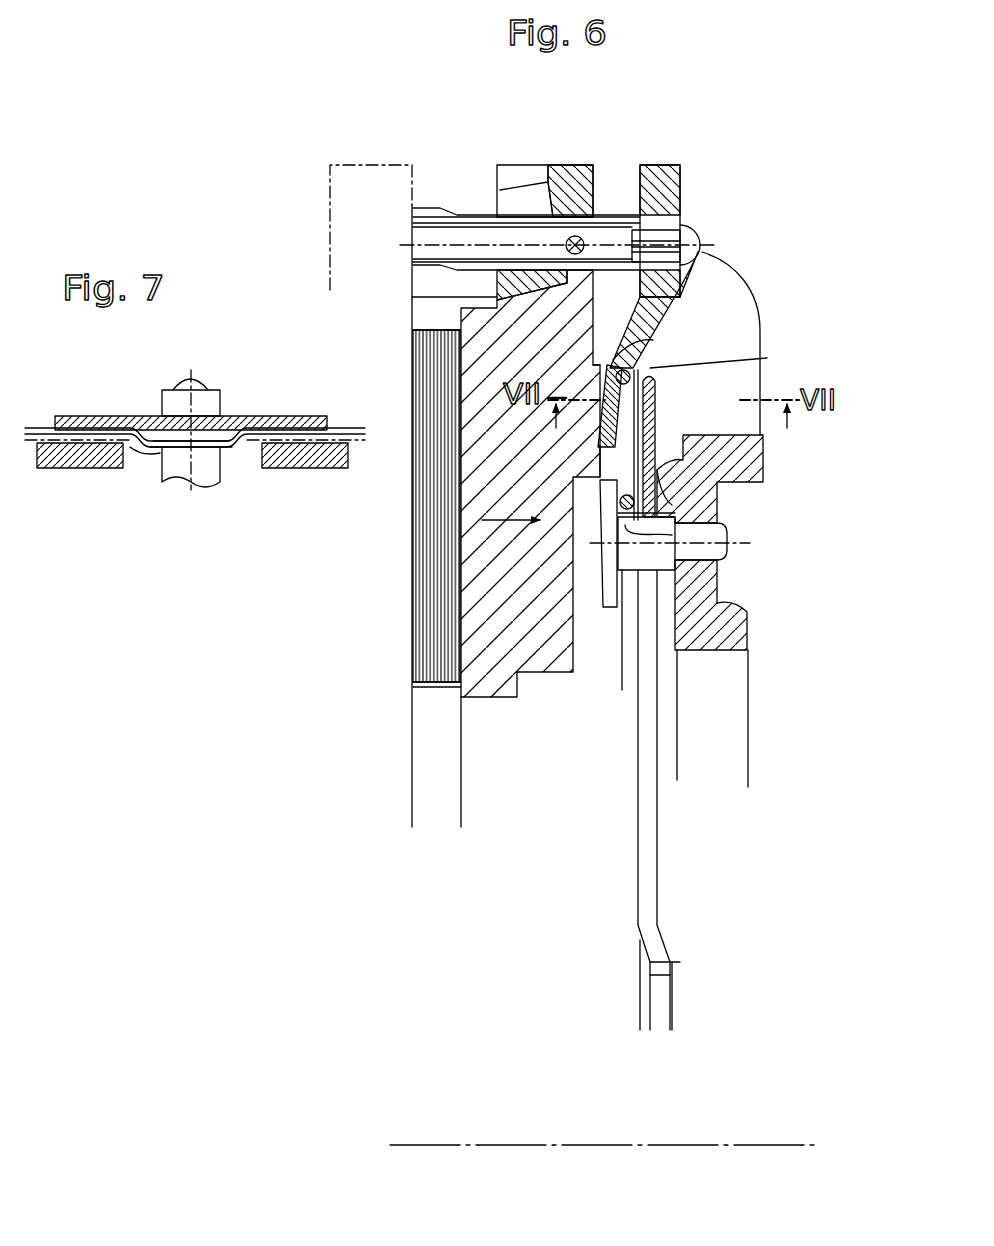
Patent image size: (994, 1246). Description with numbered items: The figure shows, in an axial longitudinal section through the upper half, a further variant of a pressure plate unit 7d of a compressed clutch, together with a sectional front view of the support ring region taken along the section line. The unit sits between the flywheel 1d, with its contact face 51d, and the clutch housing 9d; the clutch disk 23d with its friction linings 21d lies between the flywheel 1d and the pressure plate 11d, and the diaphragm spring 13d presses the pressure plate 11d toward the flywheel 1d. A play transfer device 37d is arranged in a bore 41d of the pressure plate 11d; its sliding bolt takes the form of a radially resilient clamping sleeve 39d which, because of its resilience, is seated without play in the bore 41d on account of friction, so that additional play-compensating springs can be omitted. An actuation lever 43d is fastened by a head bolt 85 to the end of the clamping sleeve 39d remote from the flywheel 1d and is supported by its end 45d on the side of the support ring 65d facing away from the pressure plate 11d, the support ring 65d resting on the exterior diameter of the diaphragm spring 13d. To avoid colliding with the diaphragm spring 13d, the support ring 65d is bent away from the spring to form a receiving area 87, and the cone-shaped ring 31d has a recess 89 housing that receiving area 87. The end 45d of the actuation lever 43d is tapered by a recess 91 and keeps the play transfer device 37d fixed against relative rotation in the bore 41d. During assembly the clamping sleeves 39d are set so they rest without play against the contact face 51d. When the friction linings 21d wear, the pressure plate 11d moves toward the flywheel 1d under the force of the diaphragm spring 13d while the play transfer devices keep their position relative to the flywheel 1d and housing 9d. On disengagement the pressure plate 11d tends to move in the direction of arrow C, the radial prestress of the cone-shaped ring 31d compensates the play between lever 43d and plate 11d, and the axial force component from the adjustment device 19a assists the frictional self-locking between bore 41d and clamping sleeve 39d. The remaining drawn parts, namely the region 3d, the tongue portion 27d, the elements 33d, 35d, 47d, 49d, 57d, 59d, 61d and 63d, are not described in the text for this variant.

In FIG. 6, the flywheel 1d is at (338, 183).
In FIG. 6, the transmission side boundary 3d is at (515, 1145).
In FIG. 6, the pressure plate unit 7d is at (752, 155).
In FIG. 6, the clutch housing 9d is at (731, 632).
In FIG. 6, the pressure plate 11d is at (486, 628).
In FIG. 6, the diaphragm spring 13d is at (649, 418).
In FIG. 7, the diaphragm spring 13d is at (238, 420).
In FIG. 6, the adjustment device 19a is at (593, 437).
In FIG. 6, the friction linings 21d is at (446, 575).
In FIG. 6, the clutch disk 23d is at (410, 782).
In FIG. 6, the release sleeve / input shaft 27d is at (648, 882).
In FIG. 6, the cone-shaped ring 31d is at (766, 446).
In FIG. 7, the cone-shaped ring 31d is at (40, 468).
In FIG. 6, the leaf spring / tangential strap 33d is at (641, 399).
In FIG. 6, the friction lining carrier 35d is at (605, 460).
In FIG. 6, the play transfer device 37d is at (706, 226).
In FIG. 6, the clamping sleeve 39d is at (613, 217).
In FIG. 6, the bore 41d is at (560, 225).
In FIG. 6, the actuation lever 43d is at (662, 296).
In FIG. 7, the actuation lever 43d is at (162, 405).
In FIG. 6, the end of the actuation lever 45d is at (626, 372).
In FIG. 7, the end of the actuation lever 45d is at (187, 470).
In FIG. 6, the clutch cover 47d is at (742, 300).
In FIG. 6, the hub / shaft 49d is at (428, 210).
In FIG. 6, the contact face 51d is at (412, 168).
In FIG. 6, the rivet pin 57d is at (573, 238).
In FIG. 6, the bearing bore 59d is at (740, 556).
In FIG. 6, the release bearing hub 61d is at (700, 537).
In FIG. 6, the bearing 63d is at (700, 500).
In FIG. 6, the support ring 65d is at (717, 363).
In FIG. 7, the support ring 65d is at (30, 428).
In FIG. 6, the head bolt 85 is at (682, 232).
In FIG. 7, the receiving area 87 is at (205, 470).
In FIG. 7, the recess 89 is at (125, 460).
In FIG. 6, the recess 91 is at (646, 341).
In FIG. 6, the arrow C is at (485, 521).